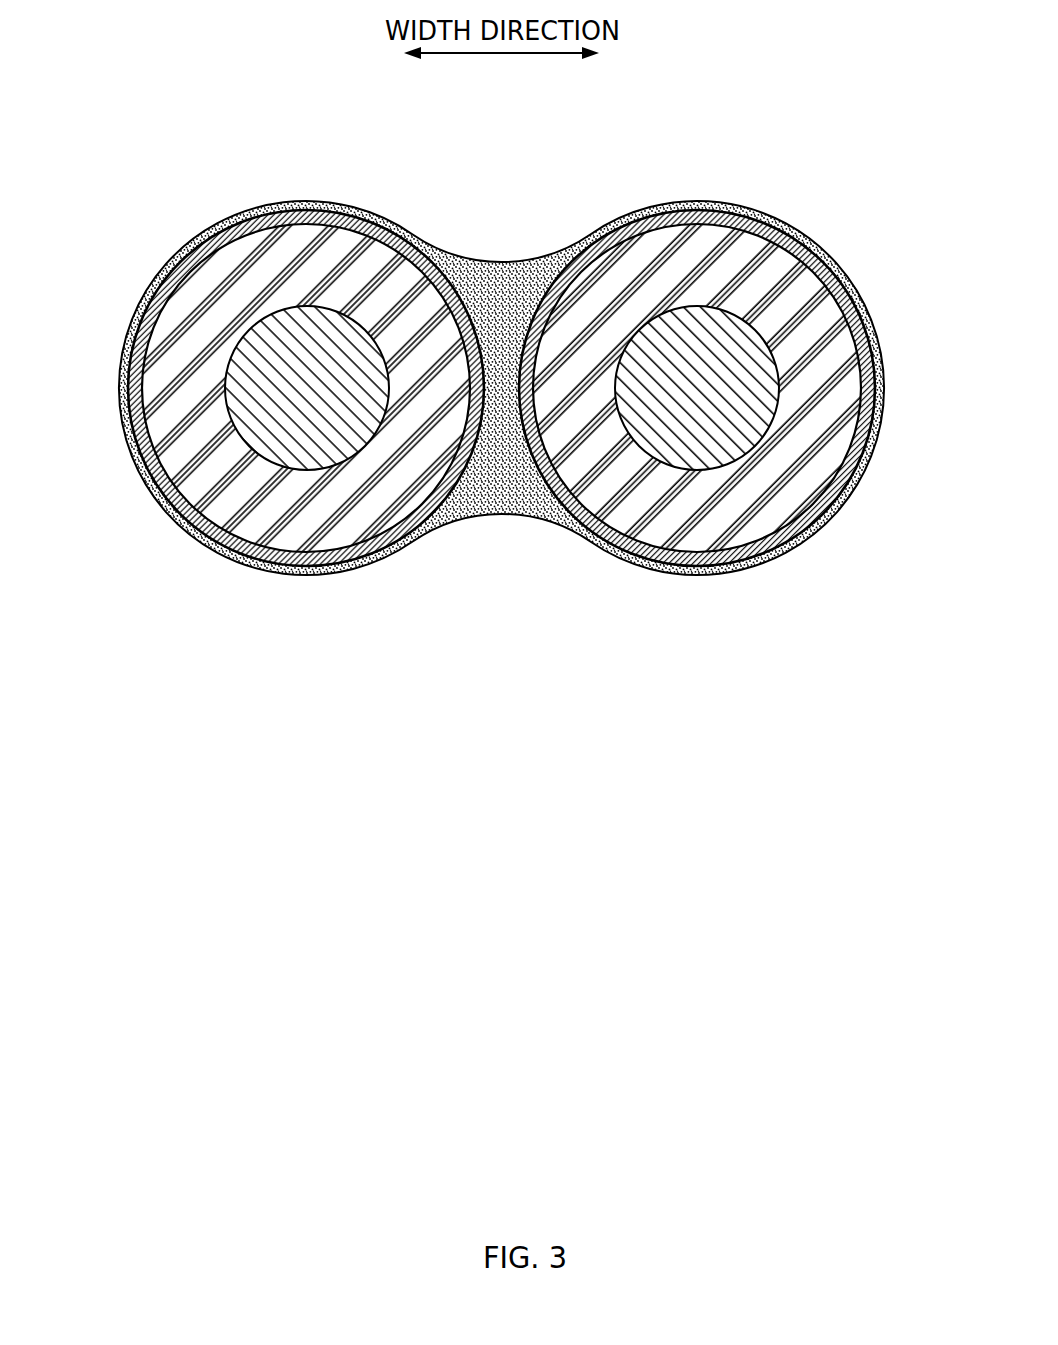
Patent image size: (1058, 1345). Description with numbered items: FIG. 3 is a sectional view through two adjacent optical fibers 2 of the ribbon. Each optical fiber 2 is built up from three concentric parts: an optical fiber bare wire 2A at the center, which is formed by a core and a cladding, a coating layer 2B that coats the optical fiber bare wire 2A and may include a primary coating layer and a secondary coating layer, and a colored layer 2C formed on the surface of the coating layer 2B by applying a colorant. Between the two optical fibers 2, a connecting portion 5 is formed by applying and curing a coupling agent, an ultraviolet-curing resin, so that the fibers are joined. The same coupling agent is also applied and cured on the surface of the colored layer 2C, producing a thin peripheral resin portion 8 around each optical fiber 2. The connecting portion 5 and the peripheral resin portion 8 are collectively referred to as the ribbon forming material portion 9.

The optical fiber 2 is at (500, 350).
The optical fiber bare wire 2A is at (253, 368).
The coating layer 2B is at (170, 338).
The colored layer 2C is at (133, 356).
The connecting portion 5 is at (452, 253).
The peripheral resin portion 8 is at (709, 202).
The ribbon forming material portion 9 is at (501, 389).